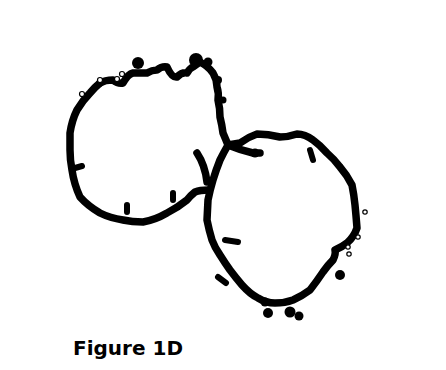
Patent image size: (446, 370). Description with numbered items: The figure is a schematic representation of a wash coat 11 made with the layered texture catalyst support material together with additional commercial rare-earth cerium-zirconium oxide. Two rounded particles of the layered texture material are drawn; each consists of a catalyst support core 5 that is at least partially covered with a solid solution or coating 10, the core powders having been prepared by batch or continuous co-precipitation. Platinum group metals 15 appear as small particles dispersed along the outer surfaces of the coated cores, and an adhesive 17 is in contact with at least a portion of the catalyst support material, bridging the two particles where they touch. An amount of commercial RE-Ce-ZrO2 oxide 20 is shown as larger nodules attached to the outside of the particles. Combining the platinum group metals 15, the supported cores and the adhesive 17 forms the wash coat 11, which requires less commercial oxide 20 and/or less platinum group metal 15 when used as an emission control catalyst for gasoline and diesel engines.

The catalyst support core 5 is at (90, 153).
The solid solution or coating 10 is at (178, 196).
The wash coat 11 is at (163, 264).
The platinum group metals 15 is at (103, 77).
The adhesive 17 is at (160, 63).
The commercial RE-Ce-ZrO2 oxide 20 is at (205, 60).